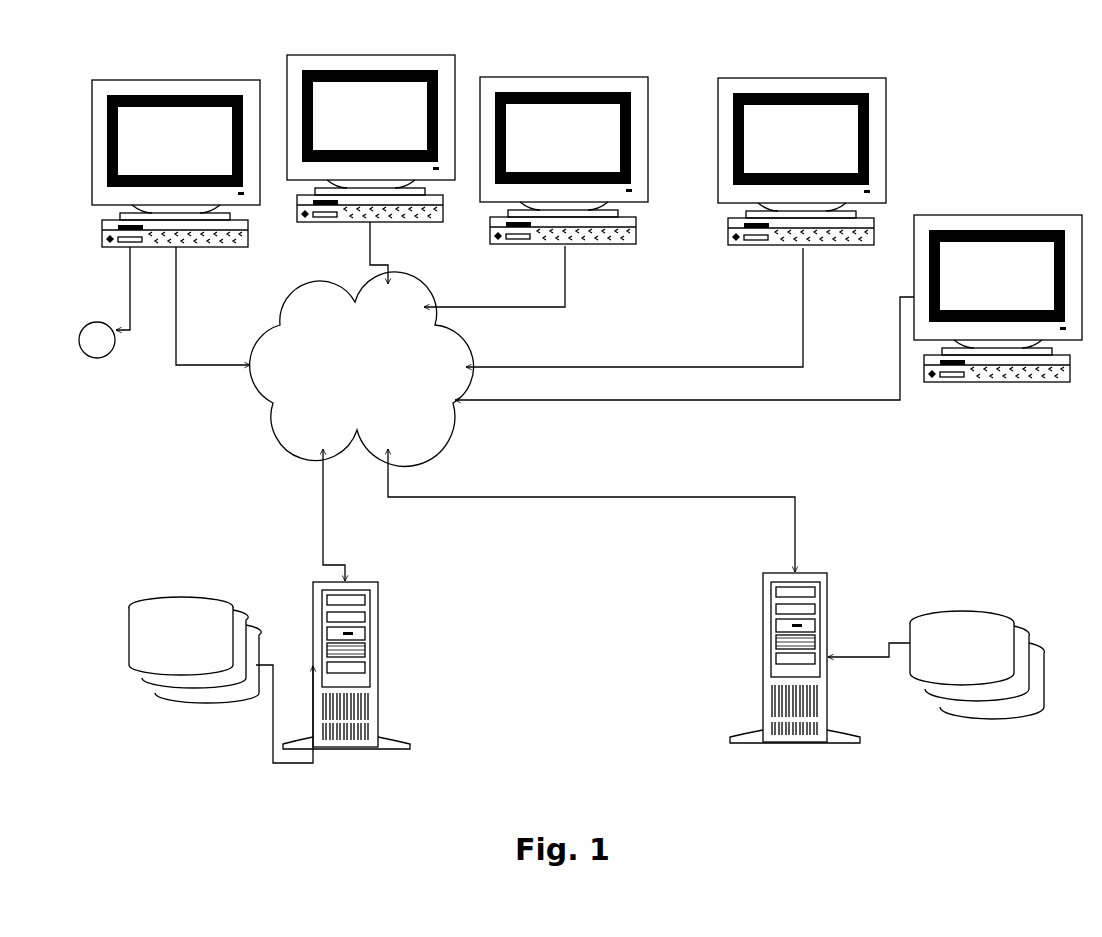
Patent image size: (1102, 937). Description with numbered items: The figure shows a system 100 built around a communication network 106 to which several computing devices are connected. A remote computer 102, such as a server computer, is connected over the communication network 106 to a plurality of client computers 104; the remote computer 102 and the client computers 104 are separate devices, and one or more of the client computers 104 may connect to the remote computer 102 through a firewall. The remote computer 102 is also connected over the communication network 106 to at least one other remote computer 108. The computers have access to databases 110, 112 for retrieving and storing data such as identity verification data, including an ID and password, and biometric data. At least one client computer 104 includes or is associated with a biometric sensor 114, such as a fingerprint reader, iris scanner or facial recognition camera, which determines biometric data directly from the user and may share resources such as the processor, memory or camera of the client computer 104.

The system 100 is at (133, 507).
The remote computer 102 is at (347, 580).
The client computer 104 is at (168, 80).
The communication network 106 is at (462, 342).
The remote computer 108 is at (827, 573).
The database 110 is at (173, 597).
The database 112 is at (955, 610).
The biometric sensor 114 is at (80, 325).